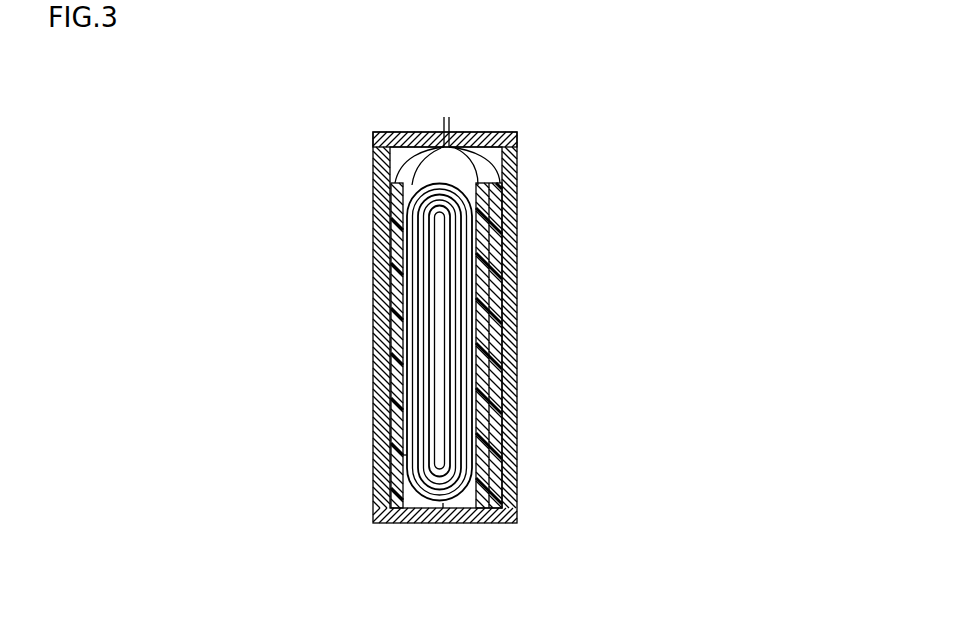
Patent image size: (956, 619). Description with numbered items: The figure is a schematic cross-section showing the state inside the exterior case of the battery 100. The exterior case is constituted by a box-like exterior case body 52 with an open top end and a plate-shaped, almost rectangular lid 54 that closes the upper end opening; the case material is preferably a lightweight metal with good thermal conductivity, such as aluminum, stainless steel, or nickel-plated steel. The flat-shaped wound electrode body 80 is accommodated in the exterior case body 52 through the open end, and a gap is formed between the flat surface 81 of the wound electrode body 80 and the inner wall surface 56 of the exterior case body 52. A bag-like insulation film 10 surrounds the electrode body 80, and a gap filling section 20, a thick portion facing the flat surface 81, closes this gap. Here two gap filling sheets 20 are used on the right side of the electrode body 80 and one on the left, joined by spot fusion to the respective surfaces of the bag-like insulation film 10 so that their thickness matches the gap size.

The battery 100 is at (635, 45).
The bag-like insulation film 10 is at (482, 132).
The gap filling section 20 is at (447, 138).
The exterior case body 52 is at (510, 327).
The lid 54 is at (420, 131).
The inner wall surface 56 is at (393, 147).
The wound electrode body 80 is at (443, 503).
The flat surface 81 is at (399, 250).